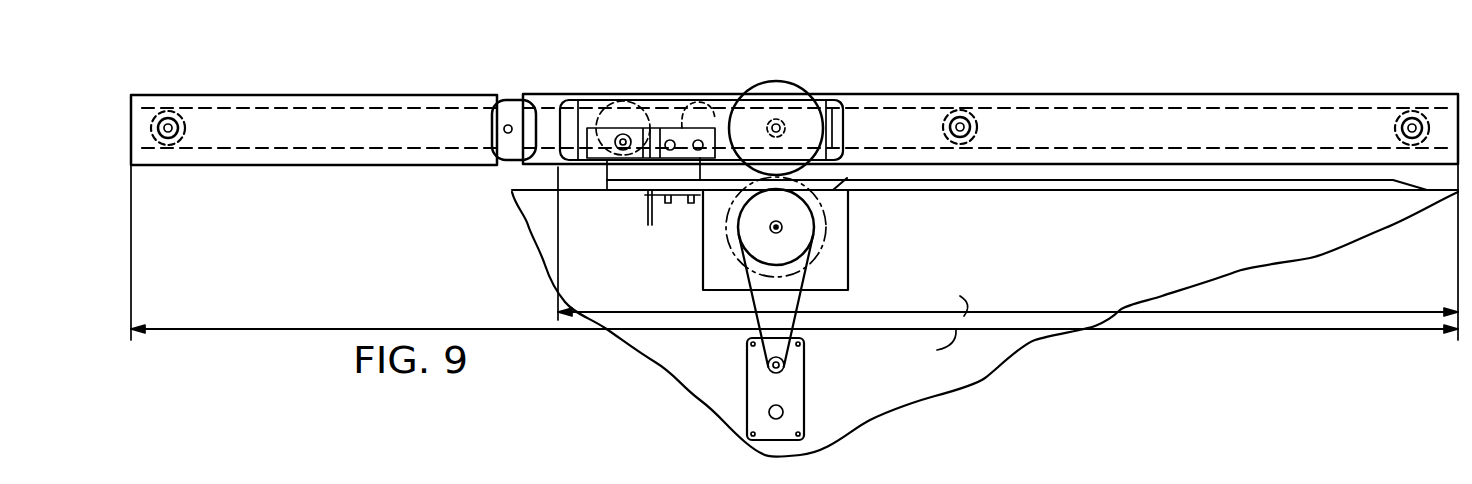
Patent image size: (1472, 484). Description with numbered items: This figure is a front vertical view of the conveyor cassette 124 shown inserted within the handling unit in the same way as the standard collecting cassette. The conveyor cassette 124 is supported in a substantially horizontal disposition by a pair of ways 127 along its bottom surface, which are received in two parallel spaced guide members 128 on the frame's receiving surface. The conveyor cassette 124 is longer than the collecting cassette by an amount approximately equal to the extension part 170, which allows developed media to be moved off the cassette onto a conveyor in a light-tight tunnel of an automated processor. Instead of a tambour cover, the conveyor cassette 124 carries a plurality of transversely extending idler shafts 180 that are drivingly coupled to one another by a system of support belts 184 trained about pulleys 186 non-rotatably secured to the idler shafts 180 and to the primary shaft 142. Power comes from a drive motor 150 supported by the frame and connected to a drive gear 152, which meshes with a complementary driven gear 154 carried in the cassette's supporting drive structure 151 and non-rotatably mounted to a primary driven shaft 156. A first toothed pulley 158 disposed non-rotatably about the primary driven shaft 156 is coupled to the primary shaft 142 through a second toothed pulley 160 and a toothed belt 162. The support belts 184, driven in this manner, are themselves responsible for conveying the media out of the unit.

The conveyor cassette 124 is at (887, 76).
The ways 127 is at (943, 172).
The guide members 128 is at (1052, 183).
The primary shaft 142 is at (638, 100).
The drive motor 150 is at (804, 380).
The supporting drive structure 151 is at (848, 125).
The drive gear 152 is at (822, 244).
The driven gear 154 is at (790, 83).
The primary driven shaft 156 is at (820, 102).
The first toothed pulley 158 is at (769, 118).
The second toothed pulley 160 is at (595, 103).
The toothed belt 162 is at (722, 111).
The extension part 170 is at (292, 94).
The idler shafts 180 is at (168, 118).
The support belts 184 is at (393, 106).
The pulleys 186 is at (186, 108).